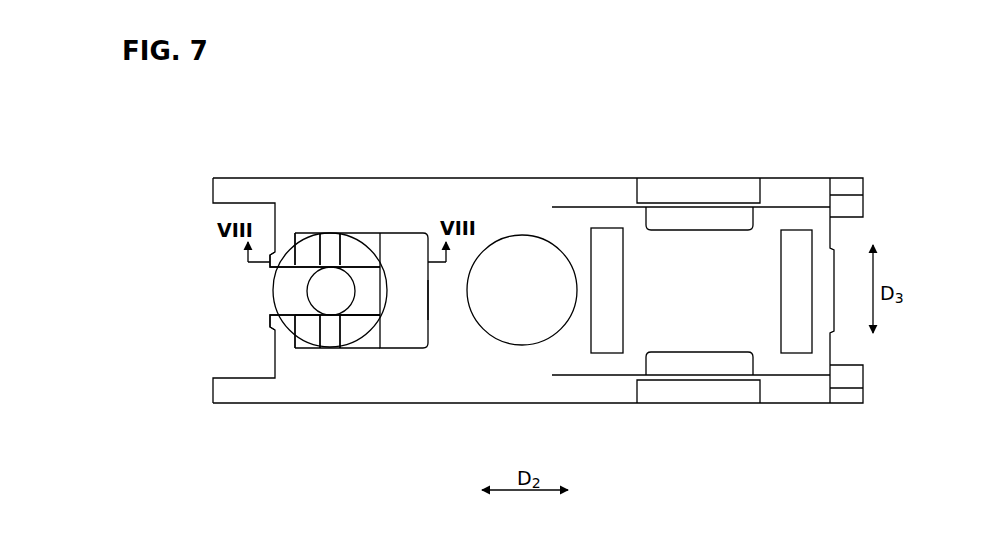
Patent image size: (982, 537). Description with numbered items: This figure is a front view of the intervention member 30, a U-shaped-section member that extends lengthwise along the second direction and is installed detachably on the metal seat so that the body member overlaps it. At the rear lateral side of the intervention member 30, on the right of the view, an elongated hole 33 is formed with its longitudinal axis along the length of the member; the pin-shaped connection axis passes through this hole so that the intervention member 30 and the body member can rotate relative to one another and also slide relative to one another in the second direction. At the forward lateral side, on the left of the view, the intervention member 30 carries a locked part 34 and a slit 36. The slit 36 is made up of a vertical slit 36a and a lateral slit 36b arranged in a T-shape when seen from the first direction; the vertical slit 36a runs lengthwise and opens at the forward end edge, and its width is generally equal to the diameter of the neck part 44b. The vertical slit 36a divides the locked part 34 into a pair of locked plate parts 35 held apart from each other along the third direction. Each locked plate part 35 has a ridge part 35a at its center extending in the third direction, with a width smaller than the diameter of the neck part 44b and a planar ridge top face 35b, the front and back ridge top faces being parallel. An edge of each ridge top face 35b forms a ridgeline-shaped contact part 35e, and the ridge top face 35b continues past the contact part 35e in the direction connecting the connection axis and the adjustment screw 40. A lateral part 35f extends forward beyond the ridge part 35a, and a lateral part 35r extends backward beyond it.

The intervention member 30 is at (517, 153).
The elongated hole 33 is at (725, 203).
The locked part 34 is at (347, 234).
The locked plate part 35 is at (313, 235).
The ridge part 35a is at (325, 233).
The ridge top face 35b is at (350, 237).
The contact part 35e is at (300, 233).
The lateral part 35f is at (313, 318).
The lateral part 35r is at (362, 330).
The slit 36 is at (418, 348).
The vertical slit 36a is at (271, 267).
The lateral slit 36b is at (420, 298).
The adjustment screw 40 is at (273, 292).
The neck part 44b is at (312, 290).